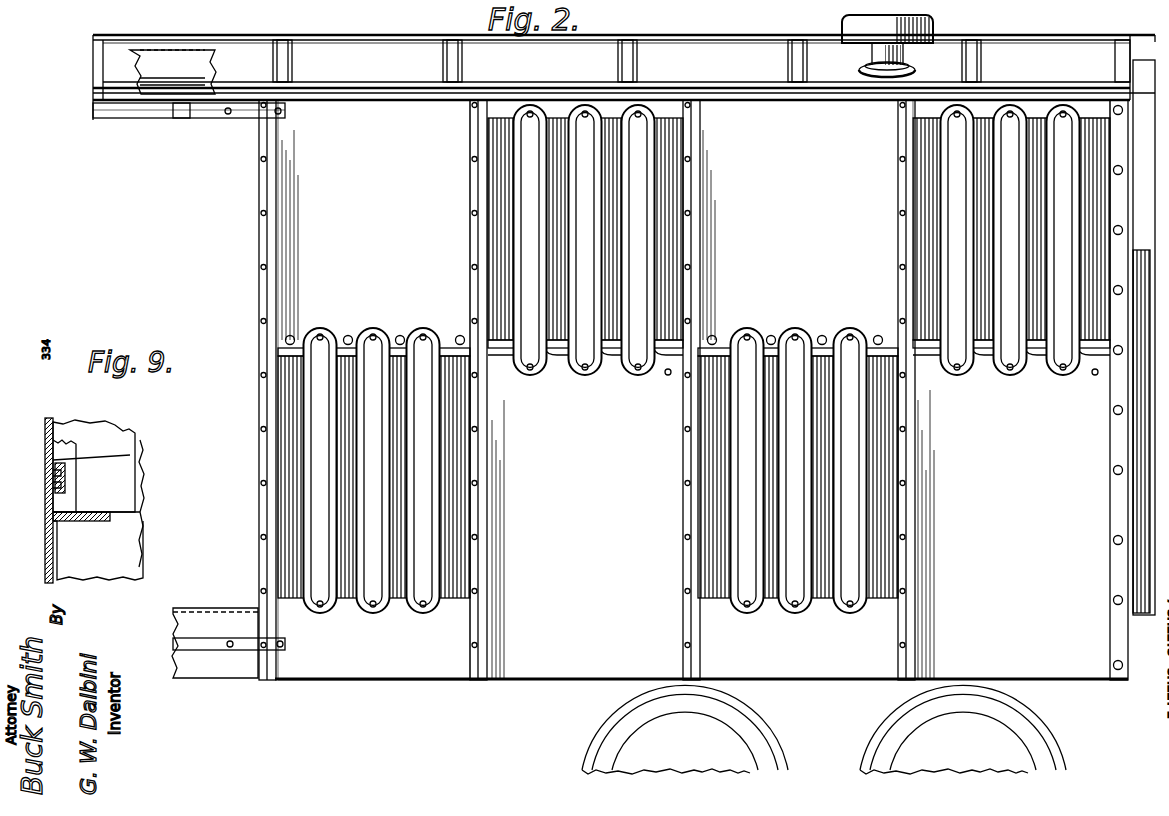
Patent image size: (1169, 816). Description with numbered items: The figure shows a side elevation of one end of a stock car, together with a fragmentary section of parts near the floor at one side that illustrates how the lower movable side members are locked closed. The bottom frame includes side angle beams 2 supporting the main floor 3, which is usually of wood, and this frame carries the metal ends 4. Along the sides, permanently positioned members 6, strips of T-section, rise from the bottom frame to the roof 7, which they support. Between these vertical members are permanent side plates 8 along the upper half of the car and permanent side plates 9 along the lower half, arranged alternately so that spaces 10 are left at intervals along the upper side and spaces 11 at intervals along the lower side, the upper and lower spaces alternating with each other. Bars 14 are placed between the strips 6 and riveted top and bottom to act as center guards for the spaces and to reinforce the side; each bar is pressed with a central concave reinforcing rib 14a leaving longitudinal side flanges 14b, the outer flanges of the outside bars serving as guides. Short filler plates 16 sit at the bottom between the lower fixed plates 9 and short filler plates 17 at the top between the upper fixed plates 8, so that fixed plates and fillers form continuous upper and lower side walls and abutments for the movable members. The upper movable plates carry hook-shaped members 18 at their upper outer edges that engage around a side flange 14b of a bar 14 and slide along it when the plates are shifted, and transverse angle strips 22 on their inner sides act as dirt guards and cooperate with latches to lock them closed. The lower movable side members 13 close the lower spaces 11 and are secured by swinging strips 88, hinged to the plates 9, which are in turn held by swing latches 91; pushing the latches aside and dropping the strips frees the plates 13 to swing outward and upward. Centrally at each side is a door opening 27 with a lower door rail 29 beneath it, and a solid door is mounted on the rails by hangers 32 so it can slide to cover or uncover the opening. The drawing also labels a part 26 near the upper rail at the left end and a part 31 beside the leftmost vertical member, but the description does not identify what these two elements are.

In FIG. 9, the side angle beam 2 is at (60, 560).
In FIG. 9, the main floor 3 is at (112, 512).
In FIG. 2, the end 4 is at (1110, 628).
In FIG. 2, the permanently positioned member 6 is at (690, 505).
In FIG. 2, the roof 7 is at (624, 77).
In FIG. 2, the permanent side plate 8 is at (588, 233).
In FIG. 2, the permanent side plate 9 is at (799, 517).
In FIG. 2, the space 10 is at (922, 158).
In FIG. 2, the space 11 is at (880, 490).
In FIG. 9, the movable side member 13 is at (50, 420).
In FIG. 2, the bar 14 is at (640, 205).
In FIG. 2, the central concave reinforcing rib 14a is at (373, 330).
In FIG. 2, the longitudinal side flange 14b is at (950, 270).
In FIG. 2, the short filler plate 16 is at (588, 638).
In FIG. 2, the short filler plate 17 is at (1040, 110).
In FIG. 2, the hook-shaped member 18 is at (662, 358).
In FIG. 2, the transverse angle strip 22 is at (562, 345).
In FIG. 2, the top bracket 26 is at (165, 118).
In FIG. 2, the door opening 27 is at (207, 295).
In FIG. 2, the lower door rail 29 is at (234, 650).
In FIG. 2, the left post 31 is at (265, 240).
In FIG. 2, the hanger 32 is at (1130, 450).
In FIG. 9, the swinging strip 88 is at (52, 482).
In FIG. 9, the swing latch 91 is at (125, 460).